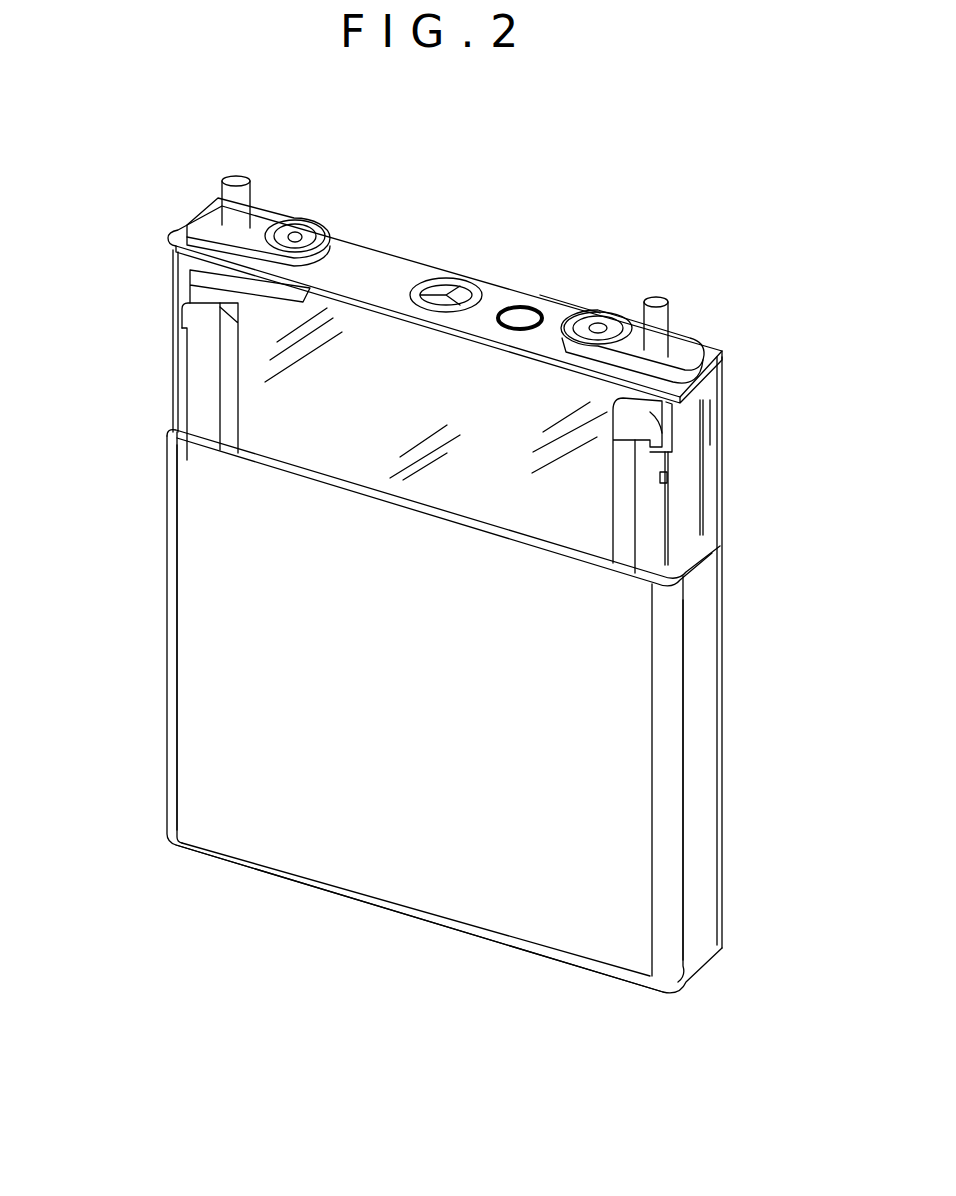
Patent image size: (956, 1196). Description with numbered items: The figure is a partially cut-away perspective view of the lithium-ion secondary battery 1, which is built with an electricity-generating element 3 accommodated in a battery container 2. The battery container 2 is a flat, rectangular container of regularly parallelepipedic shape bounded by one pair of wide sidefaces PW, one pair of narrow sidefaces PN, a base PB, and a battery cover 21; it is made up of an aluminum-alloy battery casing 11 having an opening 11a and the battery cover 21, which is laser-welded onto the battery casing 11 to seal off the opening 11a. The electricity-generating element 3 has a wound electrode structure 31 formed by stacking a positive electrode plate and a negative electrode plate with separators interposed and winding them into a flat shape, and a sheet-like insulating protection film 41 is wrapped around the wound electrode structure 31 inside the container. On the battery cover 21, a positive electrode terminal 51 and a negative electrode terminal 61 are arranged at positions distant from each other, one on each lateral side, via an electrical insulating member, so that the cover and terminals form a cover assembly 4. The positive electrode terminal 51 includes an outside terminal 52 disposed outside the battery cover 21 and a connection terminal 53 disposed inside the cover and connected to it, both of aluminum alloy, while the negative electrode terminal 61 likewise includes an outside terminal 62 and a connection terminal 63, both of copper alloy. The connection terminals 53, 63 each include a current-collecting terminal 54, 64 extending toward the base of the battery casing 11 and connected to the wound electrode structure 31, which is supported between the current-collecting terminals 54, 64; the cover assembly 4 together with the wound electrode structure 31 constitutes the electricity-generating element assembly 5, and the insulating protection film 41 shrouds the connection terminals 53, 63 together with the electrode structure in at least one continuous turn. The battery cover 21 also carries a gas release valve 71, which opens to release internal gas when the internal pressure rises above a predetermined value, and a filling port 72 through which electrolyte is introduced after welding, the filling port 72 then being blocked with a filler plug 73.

The lithium-ion secondary battery 1 is at (587, 177).
The battery container 2 is at (152, 540).
The electricity-generating element 3 is at (367, 338).
The cover assembly 4 is at (395, 233).
The electricity-generating element assembly 5 is at (404, 170).
The battery casing 11 is at (198, 585).
The opening 11a is at (250, 460).
The battery cover 21 is at (419, 272).
The wound electrode structure 31 is at (250, 383).
The insulating protection film 41 is at (178, 408).
The positive electrode terminal 51 is at (212, 214).
The outside terminal 52 is at (266, 201).
The connection terminal 53 is at (164, 260).
The current-collecting terminal 54 is at (213, 353).
The negative electrode terminal 61 is at (692, 348).
The outside terminal 62 is at (682, 342).
The connection terminal 63 is at (710, 423).
The current-collecting terminal 64 is at (648, 494).
The gas release valve 71 is at (468, 268).
The filling port 72 is at (563, 290).
The filler plug 73 is at (519, 306).
The wide sidefaces PW is at (198, 692).
The narrow sidefaces PN is at (700, 808).
The base PB is at (578, 968).